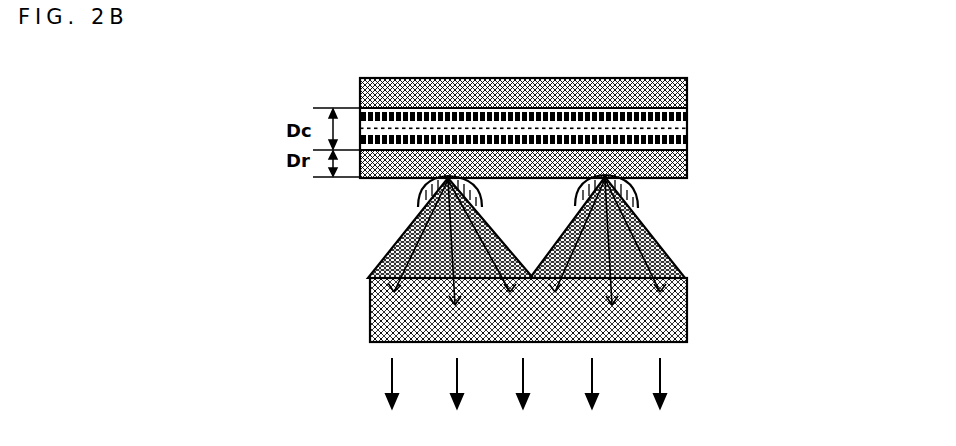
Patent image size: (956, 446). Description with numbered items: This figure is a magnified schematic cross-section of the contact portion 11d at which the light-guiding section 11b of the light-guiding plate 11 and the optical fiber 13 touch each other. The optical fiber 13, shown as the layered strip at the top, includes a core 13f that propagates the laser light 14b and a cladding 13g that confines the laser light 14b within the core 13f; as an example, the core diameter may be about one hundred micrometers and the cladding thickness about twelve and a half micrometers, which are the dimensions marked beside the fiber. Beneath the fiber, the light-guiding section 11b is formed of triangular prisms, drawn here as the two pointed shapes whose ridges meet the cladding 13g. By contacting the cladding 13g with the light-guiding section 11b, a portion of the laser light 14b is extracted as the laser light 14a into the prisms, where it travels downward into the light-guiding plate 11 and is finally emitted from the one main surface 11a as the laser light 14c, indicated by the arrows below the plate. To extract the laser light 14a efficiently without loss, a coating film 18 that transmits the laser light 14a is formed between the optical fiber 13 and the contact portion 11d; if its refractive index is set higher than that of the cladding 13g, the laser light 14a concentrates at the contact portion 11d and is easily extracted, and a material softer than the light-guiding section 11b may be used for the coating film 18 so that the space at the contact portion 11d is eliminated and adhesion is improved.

The light-guiding plate 11 is at (687, 310).
The one main surface 11a is at (643, 342).
The light-guiding section 11b is at (632, 251).
The contact portion 11d is at (603, 175).
The optical fiber 13 is at (606, 136).
The core 13f is at (653, 128).
The cladding 13g is at (573, 168).
The laser light 14a is at (447, 233).
The laser light 14b is at (507, 127).
The laser light 14c is at (457, 378).
The coating film 18 is at (432, 188).